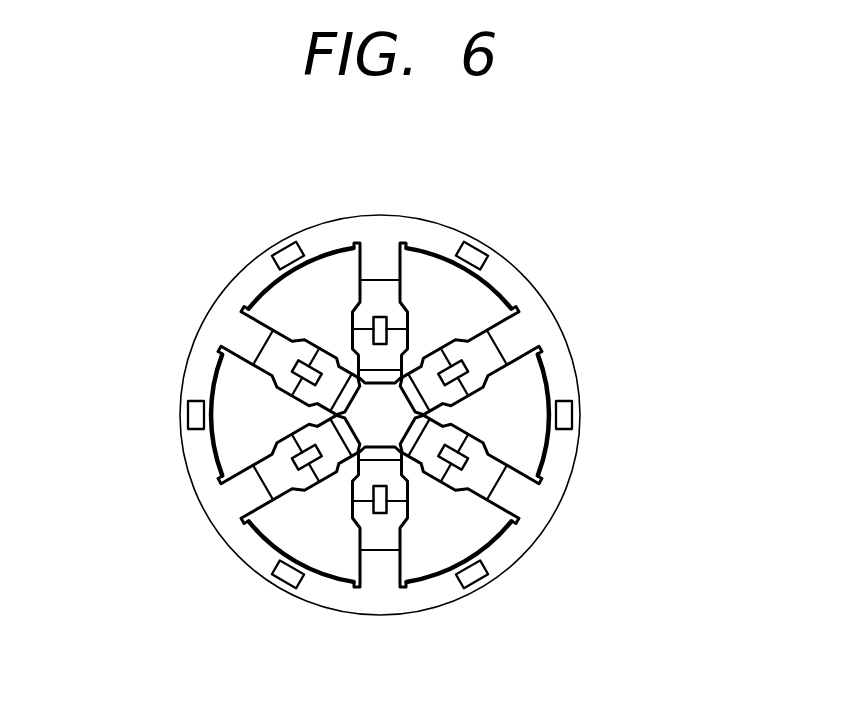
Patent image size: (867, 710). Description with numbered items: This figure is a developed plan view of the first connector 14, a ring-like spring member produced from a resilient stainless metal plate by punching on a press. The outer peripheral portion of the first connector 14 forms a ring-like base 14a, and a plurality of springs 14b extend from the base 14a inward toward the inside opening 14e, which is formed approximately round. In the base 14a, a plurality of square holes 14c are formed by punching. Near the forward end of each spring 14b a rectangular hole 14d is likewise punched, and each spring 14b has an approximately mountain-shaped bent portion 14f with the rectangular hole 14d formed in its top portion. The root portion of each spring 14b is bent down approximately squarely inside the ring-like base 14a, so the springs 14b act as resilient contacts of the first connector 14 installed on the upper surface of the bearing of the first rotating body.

The first connector 14 is at (389, 397).
The ring-like base 14a is at (438, 240).
The spring 14b is at (487, 392).
The square hole 14c is at (283, 250).
The rectangular hole 14d is at (465, 368).
The opening 14e is at (340, 267).
The mountain-shaped bent portion 14f is at (302, 483).